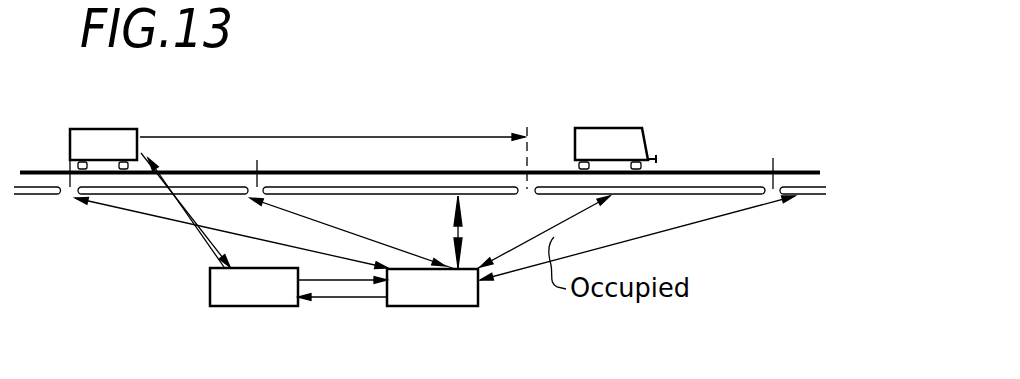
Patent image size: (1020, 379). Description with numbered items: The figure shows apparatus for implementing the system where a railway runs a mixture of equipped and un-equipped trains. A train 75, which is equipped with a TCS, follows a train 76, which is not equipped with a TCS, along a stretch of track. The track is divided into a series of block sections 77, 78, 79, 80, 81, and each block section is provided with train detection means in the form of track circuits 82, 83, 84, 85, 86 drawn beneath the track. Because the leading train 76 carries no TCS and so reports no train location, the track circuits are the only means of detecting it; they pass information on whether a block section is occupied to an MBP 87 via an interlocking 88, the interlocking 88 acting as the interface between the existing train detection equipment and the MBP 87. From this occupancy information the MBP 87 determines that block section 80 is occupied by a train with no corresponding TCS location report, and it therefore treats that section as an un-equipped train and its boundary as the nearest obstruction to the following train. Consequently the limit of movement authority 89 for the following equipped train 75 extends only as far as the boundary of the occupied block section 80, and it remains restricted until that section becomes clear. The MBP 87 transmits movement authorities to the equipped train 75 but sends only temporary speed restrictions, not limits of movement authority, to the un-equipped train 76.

The train equipped with TCS 75 is at (107, 128).
The train not equipped with TCS 76 is at (603, 128).
The block section 77 is at (51, 160).
The block section 78 is at (193, 163).
The block section 79 is at (345, 167).
The block section 80 is at (547, 157).
The block section 81 is at (784, 158).
The track circuit 82 is at (39, 197).
The track circuit 83 is at (133, 196).
The track circuit 84 is at (424, 187).
The track circuit 85 is at (695, 188).
The track circuit 86 is at (812, 188).
The MBP 87 is at (212, 306).
The interlocking 88 is at (479, 302).
The limit of movement authority 89 is at (280, 136).